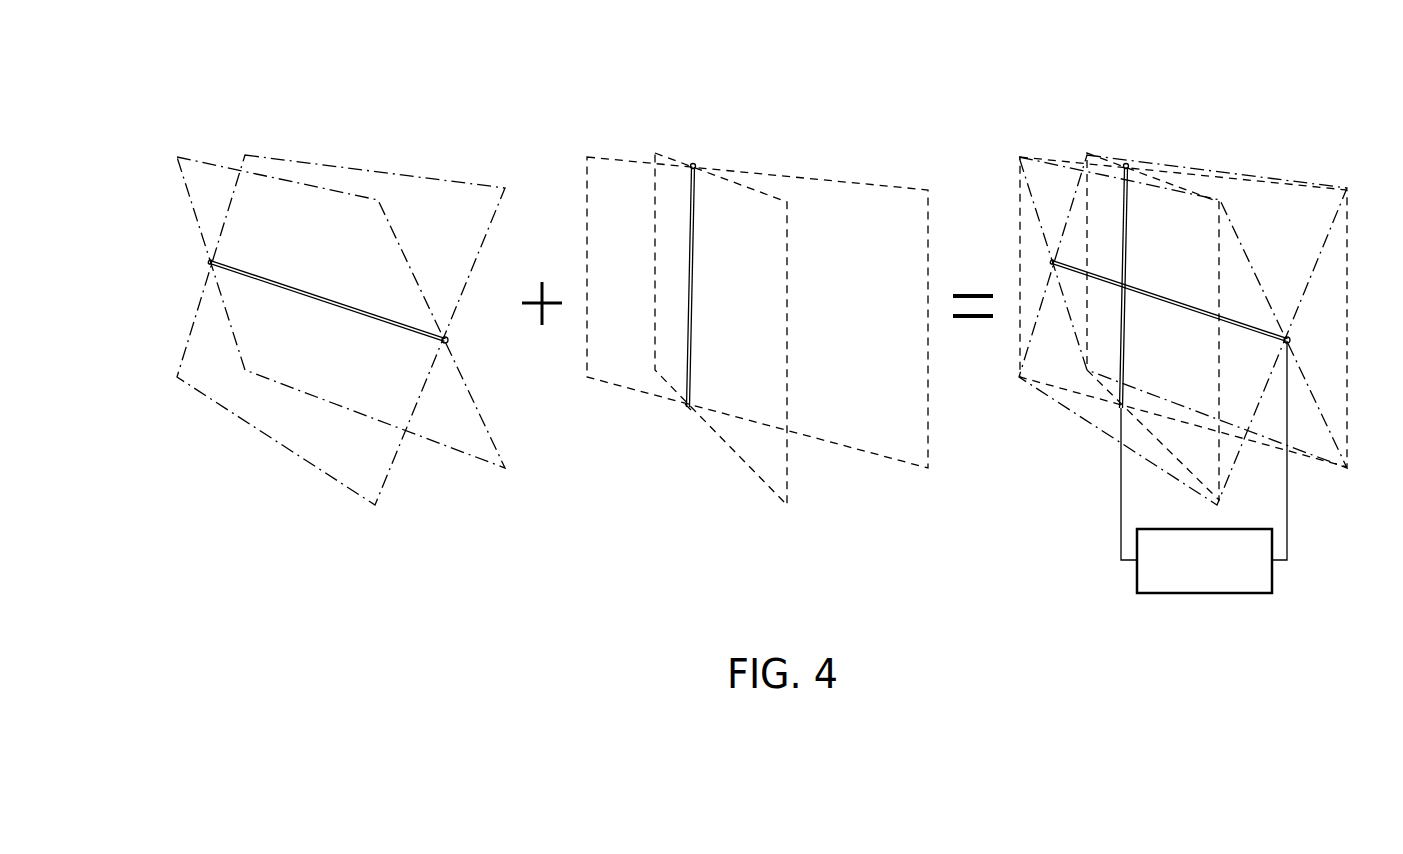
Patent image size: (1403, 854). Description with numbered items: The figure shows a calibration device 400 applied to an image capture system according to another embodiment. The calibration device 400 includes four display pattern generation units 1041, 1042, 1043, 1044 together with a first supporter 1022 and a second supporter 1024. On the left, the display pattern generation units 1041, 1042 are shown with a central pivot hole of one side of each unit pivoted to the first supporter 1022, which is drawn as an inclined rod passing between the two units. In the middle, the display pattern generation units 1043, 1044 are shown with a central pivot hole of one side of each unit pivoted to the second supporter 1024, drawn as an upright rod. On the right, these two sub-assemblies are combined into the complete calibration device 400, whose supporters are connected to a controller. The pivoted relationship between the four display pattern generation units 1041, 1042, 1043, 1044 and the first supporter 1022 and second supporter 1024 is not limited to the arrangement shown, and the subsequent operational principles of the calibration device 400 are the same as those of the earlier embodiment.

The calibration device 400 is at (1291, 86).
The display pattern generation unit 1041 is at (385, 172).
The display pattern generation unit 1042 is at (227, 170).
The display pattern generation unit 1043 is at (730, 445).
The display pattern generation unit 1044 is at (865, 455).
The first supporter 1022 is at (447, 341).
The second supporter 1024 is at (693, 165).